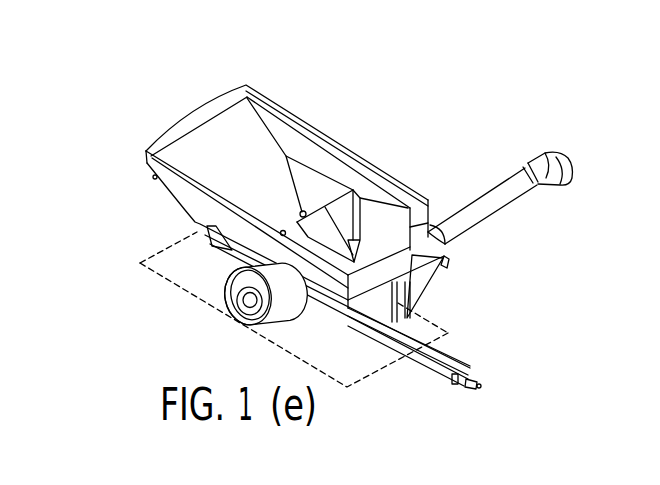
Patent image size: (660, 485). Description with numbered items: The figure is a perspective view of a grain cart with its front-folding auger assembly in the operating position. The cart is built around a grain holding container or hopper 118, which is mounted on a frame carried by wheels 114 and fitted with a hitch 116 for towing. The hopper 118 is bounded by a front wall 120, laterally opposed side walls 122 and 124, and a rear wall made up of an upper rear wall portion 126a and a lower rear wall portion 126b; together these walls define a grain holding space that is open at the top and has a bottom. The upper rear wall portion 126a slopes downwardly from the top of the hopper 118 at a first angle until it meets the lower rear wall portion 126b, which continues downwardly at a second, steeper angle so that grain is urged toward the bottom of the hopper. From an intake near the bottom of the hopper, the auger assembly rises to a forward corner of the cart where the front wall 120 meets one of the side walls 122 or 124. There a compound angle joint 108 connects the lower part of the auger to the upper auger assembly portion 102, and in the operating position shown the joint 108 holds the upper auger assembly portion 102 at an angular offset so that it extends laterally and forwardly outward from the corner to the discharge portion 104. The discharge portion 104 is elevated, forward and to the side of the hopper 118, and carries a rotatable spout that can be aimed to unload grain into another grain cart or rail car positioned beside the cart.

The upper auger assembly portion 102 is at (485, 218).
The discharge portion 104 is at (552, 155).
The compound angle joint 108 is at (446, 244).
The wheels 114 is at (233, 288).
The hitch 116 is at (452, 355).
The hopper 118 is at (322, 113).
The front wall 120 is at (368, 282).
The side wall 122 is at (186, 197).
The side wall 124 is at (387, 193).
The upper rear wall portion 126a is at (252, 133).
The lower rear wall portion 126b is at (285, 196).